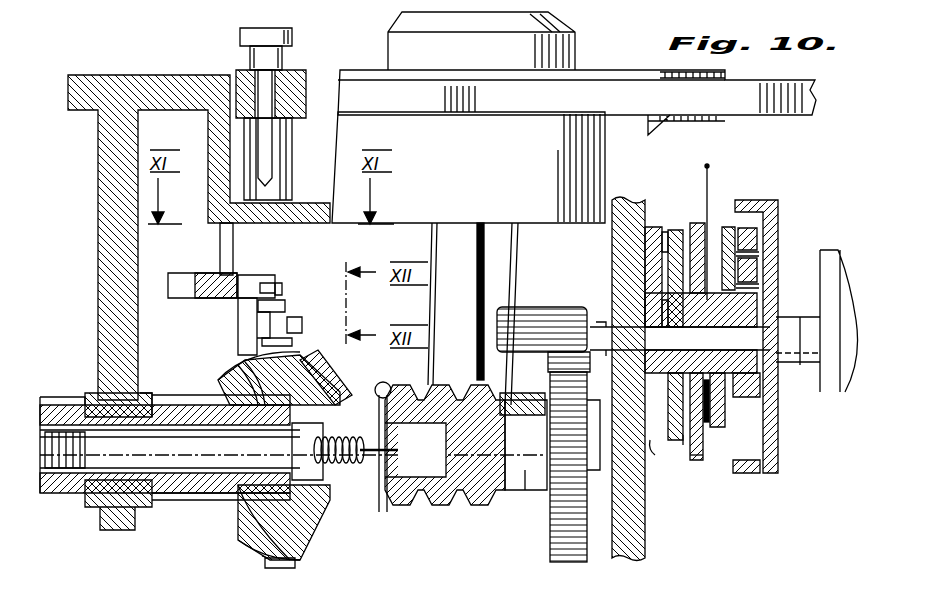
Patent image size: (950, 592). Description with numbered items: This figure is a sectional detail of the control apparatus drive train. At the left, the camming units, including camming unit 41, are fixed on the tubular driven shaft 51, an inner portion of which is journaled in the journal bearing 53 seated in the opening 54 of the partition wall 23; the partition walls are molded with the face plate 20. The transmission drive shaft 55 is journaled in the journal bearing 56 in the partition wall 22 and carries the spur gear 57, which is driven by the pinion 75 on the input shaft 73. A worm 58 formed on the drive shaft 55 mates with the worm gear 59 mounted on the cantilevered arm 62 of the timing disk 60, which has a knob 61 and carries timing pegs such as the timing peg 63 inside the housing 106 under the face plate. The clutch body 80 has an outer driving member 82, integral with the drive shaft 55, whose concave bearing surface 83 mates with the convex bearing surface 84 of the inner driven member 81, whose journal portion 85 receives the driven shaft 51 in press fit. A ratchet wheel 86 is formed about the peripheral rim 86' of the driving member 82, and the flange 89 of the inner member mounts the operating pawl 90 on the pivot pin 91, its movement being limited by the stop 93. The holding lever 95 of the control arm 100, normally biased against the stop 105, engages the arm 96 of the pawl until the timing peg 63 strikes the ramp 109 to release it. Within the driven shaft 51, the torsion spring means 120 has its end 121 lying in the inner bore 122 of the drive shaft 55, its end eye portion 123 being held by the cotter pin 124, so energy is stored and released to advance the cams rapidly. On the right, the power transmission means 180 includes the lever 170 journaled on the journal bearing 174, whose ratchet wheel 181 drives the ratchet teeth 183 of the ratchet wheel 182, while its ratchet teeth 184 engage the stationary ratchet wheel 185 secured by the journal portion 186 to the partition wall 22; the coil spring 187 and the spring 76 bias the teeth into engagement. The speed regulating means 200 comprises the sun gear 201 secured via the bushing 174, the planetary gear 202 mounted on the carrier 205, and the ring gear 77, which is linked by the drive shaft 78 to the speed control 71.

The face plate 20 is at (748, 112).
The partition wall 22 is at (618, 272).
The partition wall 23 is at (100, 195).
The camming unit 41 is at (40, 395).
The driven shaft 51 is at (160, 498).
The journal bearing 53 is at (150, 395).
The opening 54 is at (82, 400).
The drive shaft 55 is at (530, 468).
The journal bearing 56 is at (585, 470).
The spur gear 57 is at (562, 562).
The worm 58 is at (455, 490).
The worm gear 59 is at (522, 392).
The timing disk 60 is at (606, 76).
The knob 61 is at (388, 50).
The cantilevered arm 62 is at (506, 254).
The timing peg 63 is at (256, 80).
The speed control 71 is at (836, 442).
The input shaft 73 is at (603, 330).
The pinion 75 is at (520, 320).
The spring 76 is at (550, 370).
The ring gear 77 is at (770, 244).
The drive shaft 78 is at (808, 328).
The clutch body 80 is at (326, 545).
The inner driven member 81 is at (240, 540).
The outer driving member 82 is at (310, 505).
The concave bearing surface 83 is at (302, 378).
The convex bearing surface 84 is at (256, 380).
The journal portion 85 is at (205, 493).
The ratchet wheel 86 is at (280, 573).
The peripheral rim 86' is at (238, 567).
The flange 89 is at (238, 325).
The operating pawl 90 is at (285, 307).
The pivot pin 91 is at (294, 343).
The stop 93 is at (302, 325).
The holding lever 95 is at (268, 283).
The arm 96 is at (282, 290).
The control arm 100 is at (182, 300).
The stop 105 is at (220, 260).
The housing 106 is at (468, 167).
The ramp 109 is at (288, 160).
The torsion spring means 120 is at (65, 470).
The spring end 121 is at (362, 420).
The inner bore 122 is at (420, 463).
The end eye portion 123 is at (400, 450).
The cotter pin 124 is at (390, 384).
The lever 170 is at (698, 460).
The journal bearing 174 is at (740, 318).
The power transmission means 180 is at (682, 212).
The ratchet wheel 181 is at (683, 455).
The ratchet wheel 182 is at (700, 200).
The ratchet teeth 183 is at (688, 440).
The ratchet teeth 184 is at (666, 455).
The stationary ratchet wheel 185 is at (640, 232).
The journal portion 186 is at (618, 283).
The coil spring 187 is at (730, 416).
The speed regulating means 200 is at (790, 186).
The sun gear 201 is at (750, 395).
The planetary gear 202 is at (750, 265).
The carrier 205 is at (735, 212).